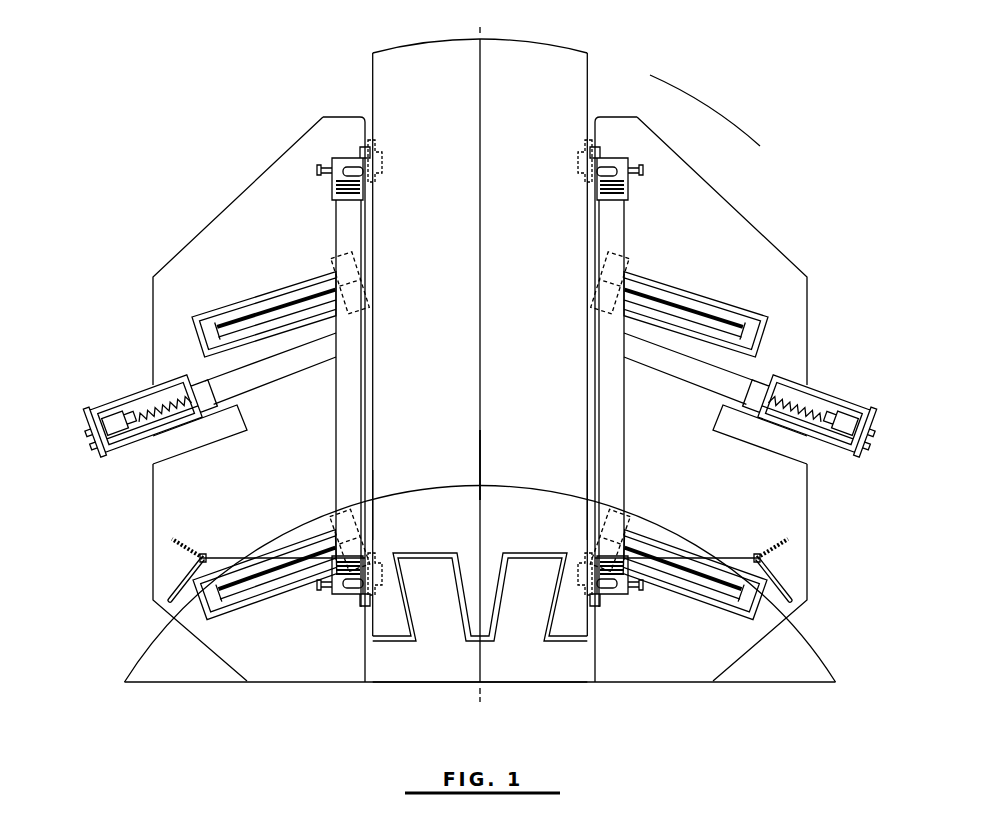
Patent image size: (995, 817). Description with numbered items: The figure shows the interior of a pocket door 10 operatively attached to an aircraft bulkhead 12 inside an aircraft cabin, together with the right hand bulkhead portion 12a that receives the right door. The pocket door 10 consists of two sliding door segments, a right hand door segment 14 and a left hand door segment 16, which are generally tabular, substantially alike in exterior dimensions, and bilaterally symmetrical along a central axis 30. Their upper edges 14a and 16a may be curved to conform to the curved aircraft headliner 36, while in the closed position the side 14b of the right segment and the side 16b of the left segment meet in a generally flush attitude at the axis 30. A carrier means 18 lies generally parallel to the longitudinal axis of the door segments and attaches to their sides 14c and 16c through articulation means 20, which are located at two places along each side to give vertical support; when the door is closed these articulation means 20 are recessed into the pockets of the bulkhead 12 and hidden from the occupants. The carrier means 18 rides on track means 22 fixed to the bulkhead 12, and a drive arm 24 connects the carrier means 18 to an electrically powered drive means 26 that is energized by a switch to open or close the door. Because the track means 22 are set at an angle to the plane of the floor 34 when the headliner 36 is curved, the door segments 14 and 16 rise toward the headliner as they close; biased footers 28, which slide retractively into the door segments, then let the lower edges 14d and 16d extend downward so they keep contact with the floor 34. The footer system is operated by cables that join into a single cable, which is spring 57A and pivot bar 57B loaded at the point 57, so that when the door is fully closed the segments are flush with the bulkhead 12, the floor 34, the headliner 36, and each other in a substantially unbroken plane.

The pocket door 10 is at (702, 56).
The aircraft bulkhead 12 is at (193, 184).
The right lining segment 12a is at (826, 330).
The right hand door segment 14 is at (530, 326).
The upper edge of right hand door segment 14a is at (531, 43).
The side of right hand door segment 14b is at (480, 464).
The side of right hand door segment 14c is at (587, 504).
The lower edge of right hand door segment 14d is at (544, 681).
The left hand door segment 16 is at (415, 326).
The upper edge of left hand door segment 16a is at (440, 43).
The side of left hand door segment 16b is at (480, 464).
The side of left hand door segment 16c is at (373, 504).
The lower edge of left hand door segment 16d is at (410, 681).
The carrier means 18 is at (342, 234).
The articulation means 20 is at (353, 146).
The track means 22 is at (235, 298).
The drive arm 24 is at (281, 376).
The drive means 26 is at (137, 457).
The footers 28 is at (422, 608).
The axis 30 is at (480, 363).
The floor 34 is at (753, 683).
The curved aircraft headliner 36 is at (699, 100).
The loading point of single cable 57 is at (197, 551).
The spring 57A is at (767, 547).
The pivot bar 57B is at (790, 584).